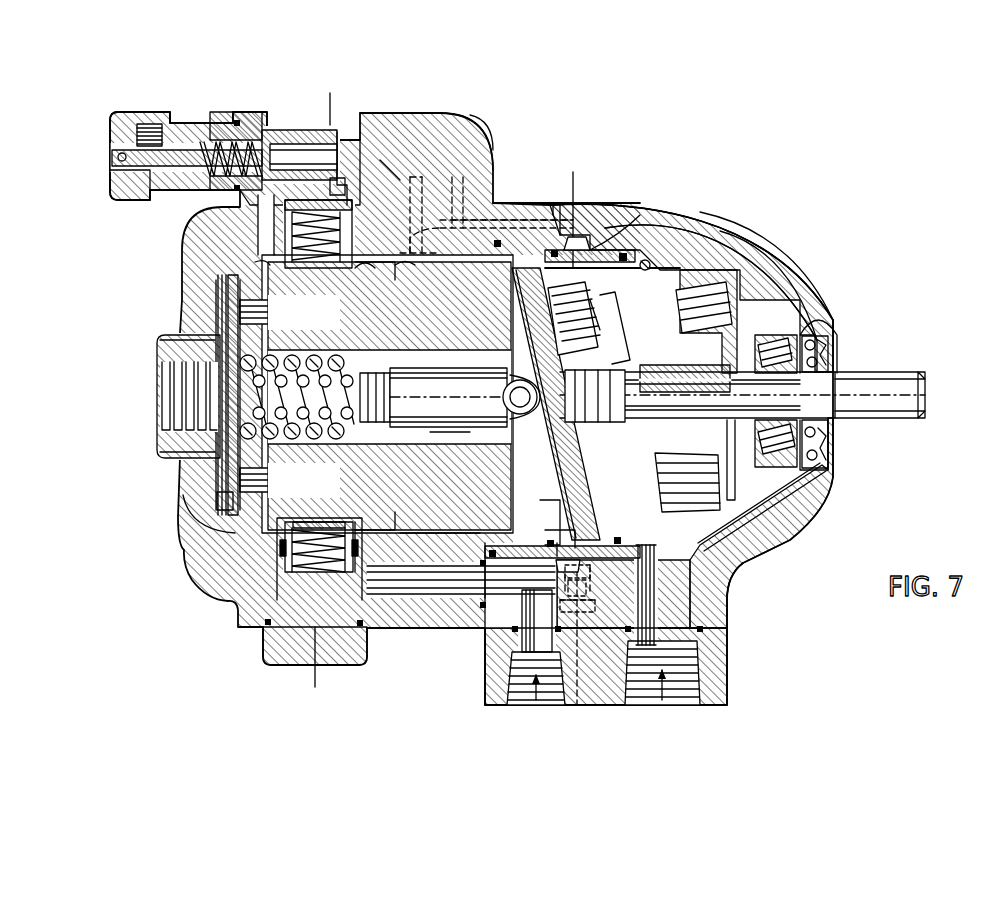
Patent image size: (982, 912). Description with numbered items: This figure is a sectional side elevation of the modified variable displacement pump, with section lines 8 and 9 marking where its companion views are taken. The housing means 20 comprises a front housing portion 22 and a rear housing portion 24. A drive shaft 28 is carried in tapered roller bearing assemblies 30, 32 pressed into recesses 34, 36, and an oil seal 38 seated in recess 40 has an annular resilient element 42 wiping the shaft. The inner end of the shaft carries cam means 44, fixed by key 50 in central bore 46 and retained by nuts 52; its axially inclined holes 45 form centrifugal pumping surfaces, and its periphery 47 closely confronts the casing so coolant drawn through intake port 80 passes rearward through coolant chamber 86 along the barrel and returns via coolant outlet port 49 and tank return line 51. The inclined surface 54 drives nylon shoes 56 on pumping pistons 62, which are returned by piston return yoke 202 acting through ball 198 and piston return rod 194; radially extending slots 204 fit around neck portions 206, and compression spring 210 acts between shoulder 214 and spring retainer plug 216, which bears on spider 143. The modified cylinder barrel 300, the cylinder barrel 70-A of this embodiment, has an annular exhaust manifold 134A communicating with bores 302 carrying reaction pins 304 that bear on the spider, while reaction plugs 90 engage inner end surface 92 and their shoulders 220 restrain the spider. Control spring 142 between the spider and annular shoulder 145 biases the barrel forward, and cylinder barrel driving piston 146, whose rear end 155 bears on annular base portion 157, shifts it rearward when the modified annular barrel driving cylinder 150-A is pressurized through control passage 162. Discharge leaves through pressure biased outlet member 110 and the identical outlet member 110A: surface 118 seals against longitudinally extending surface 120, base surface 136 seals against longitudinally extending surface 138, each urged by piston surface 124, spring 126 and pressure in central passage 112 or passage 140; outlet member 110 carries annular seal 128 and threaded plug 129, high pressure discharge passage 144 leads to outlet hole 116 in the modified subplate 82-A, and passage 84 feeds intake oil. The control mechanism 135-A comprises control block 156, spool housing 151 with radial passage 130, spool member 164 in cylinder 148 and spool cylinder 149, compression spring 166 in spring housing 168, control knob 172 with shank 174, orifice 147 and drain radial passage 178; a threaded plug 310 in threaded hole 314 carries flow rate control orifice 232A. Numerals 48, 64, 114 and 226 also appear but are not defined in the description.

The housing means 20 is at (787, 252).
The front housing portion 22 is at (803, 272).
The rear housing portion 24 is at (178, 289).
The drive shaft 28 is at (905, 372).
The tapered roller bearing assembly 30 is at (720, 285).
The tapered roller bearing assembly 32 is at (775, 340).
The recess 34 is at (758, 505).
The recess 36 is at (820, 318).
The oil seal 38 is at (820, 348).
The recess 40 is at (820, 336).
The annular resilient element 42 is at (825, 364).
The cam means 44 is at (645, 260).
The axially inclined holes 45 is at (680, 268).
The central bore 46 is at (696, 425).
The periphery of cam means 47 is at (740, 243).
The roller bearing 48 is at (750, 372).
The coolant outlet port 49 is at (178, 388).
The key 50 is at (680, 370).
The tank return line 51 is at (168, 372).
The nuts 52 is at (596, 376).
The inclined surface 54 is at (645, 480).
The nylon shoes 56 is at (595, 310).
The pumping pistons 62 is at (542, 505).
The bearing cage 64 is at (630, 330).
The cylinder barrel 70-A is at (500, 225).
The intake port 80 is at (702, 690).
The modified subplate 82-A is at (700, 663).
The passage 84 is at (728, 612).
The return chamber 86 is at (450, 533).
The reaction plug 90 is at (220, 318).
The inner end surface 92 is at (165, 355).
The pressure biased outlet member 110 is at (276, 521).
The outlet member 110A is at (265, 265).
The central passage 112 is at (352, 524).
The channel 114 is at (442, 622).
The outlet hole 116 is at (510, 668).
The surface 118 is at (272, 508).
The longitudinally extending surface 120 is at (408, 575).
The piston surface 124 is at (285, 215).
The spring 126 is at (292, 245).
The annular seal 128 is at (280, 552).
The threaded plug 129 is at (278, 660).
The radial passage 130 is at (338, 140).
The modified annular exhaust manifold 134A is at (358, 285).
The control mechanism 135-A is at (478, 117).
The base surface 136 is at (362, 268).
The longitudinally extending surface 138 is at (405, 268).
The passage 140 is at (383, 224).
The control spring 142 is at (376, 430).
The spider 143 is at (165, 340).
The high pressure discharge passage 144 is at (385, 165).
The annular shoulder 145 is at (438, 368).
The cylinder barrel driving piston 146 is at (605, 250).
The orifice 147 is at (383, 113).
The cylinder 148 is at (618, 252).
The spool cylinder 149 is at (346, 186).
The modified annular barrel driving cylinder 150-A is at (566, 243).
The spool housing 151 is at (312, 132).
The rear end 155 is at (548, 540).
The control block 156 is at (428, 113).
The annular base portion 157 is at (483, 570).
The control passage 162 is at (558, 212).
The spool member 164 is at (262, 128).
The compression spring 166 is at (220, 140).
The spring housing 168 is at (158, 124).
The control knob 172 is at (128, 118).
The shank 174 is at (118, 190).
The radial passage 178 is at (258, 213).
The piston return rod 194 is at (468, 434).
The ball 198 is at (513, 383).
The piston return yoke 202 is at (514, 420).
The radially extending slots 204 is at (518, 278).
The neck portions 206 is at (520, 320).
The compression spring 210 is at (345, 360).
The shoulder 214 is at (362, 366).
The spring retainer plug 216 is at (220, 412).
The shoulders 220 is at (222, 292).
The passage 226 is at (425, 253).
The flow rate control orifice 232A is at (580, 570).
The modified cylinder barrel 300 is at (403, 329).
The bores 302 is at (300, 304).
The reaction pin 304 is at (270, 320).
The threaded plug 310 is at (582, 590).
The threaded hole 314 is at (578, 612).
The section line 8 is at (332, 100).
The section line 9 is at (573, 172).